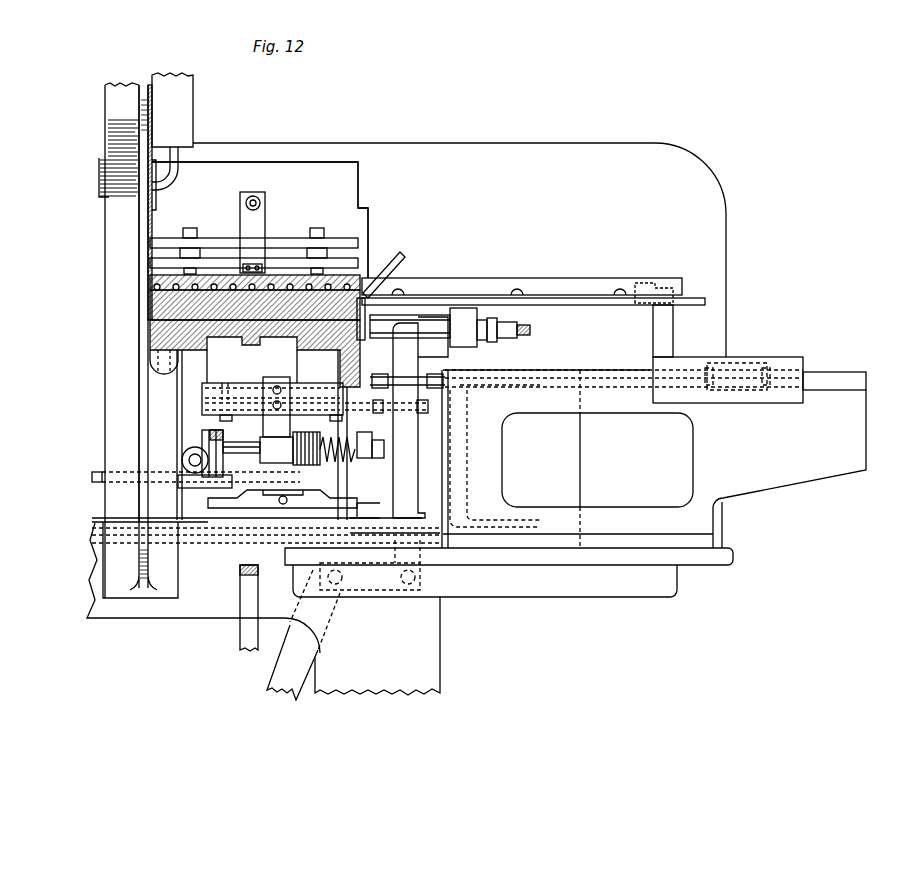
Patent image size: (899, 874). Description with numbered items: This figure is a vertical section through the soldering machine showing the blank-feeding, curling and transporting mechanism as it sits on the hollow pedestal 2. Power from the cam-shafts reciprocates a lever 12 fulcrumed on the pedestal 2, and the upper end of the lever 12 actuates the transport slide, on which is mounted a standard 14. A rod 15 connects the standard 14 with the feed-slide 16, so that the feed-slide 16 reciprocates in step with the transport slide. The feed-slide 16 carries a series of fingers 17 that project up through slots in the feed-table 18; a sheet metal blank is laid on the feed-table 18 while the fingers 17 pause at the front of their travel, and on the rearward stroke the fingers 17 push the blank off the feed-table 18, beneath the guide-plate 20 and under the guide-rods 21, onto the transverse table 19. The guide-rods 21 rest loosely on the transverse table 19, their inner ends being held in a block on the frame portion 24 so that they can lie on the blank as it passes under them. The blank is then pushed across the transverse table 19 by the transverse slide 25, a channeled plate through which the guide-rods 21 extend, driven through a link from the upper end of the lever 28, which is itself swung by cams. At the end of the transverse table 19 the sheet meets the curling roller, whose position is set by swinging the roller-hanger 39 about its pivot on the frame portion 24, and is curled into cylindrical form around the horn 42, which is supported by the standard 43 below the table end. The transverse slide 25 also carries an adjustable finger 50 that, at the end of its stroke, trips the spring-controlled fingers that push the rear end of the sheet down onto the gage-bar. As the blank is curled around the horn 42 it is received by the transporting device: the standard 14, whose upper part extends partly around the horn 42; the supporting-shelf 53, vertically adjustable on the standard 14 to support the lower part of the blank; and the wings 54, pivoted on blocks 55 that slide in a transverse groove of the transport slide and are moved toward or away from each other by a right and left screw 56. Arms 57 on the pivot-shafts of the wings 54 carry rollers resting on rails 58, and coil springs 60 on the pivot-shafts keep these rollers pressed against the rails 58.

The hollow pedestal 2 is at (509, 621).
The lever 12 is at (343, 620).
The standard 14 is at (608, 459).
The rod 15 is at (430, 395).
The feed-slide 16 is at (781, 363).
The fingers 17 is at (664, 331).
The feed-table 18 is at (690, 300).
The transverse table 19 is at (150, 318).
The guide-plate 20 is at (402, 254).
The guide-rods 21 is at (172, 304).
The frame portion 24 is at (157, 252).
The transverse slide 25 is at (150, 291).
The lever 28 is at (252, 595).
The roller-hanger 39 is at (260, 220).
The horn 42 is at (432, 341).
The standard 43 is at (449, 332).
The adjustable finger 50 is at (252, 232).
The supporting-shelf 53 is at (200, 383).
The wings 54 is at (213, 363).
The blocks 55 is at (262, 492).
The right and left screw 56 is at (283, 503).
The arms 57 is at (200, 450).
The rails 58 is at (97, 483).
The coil springs 60 is at (335, 462).